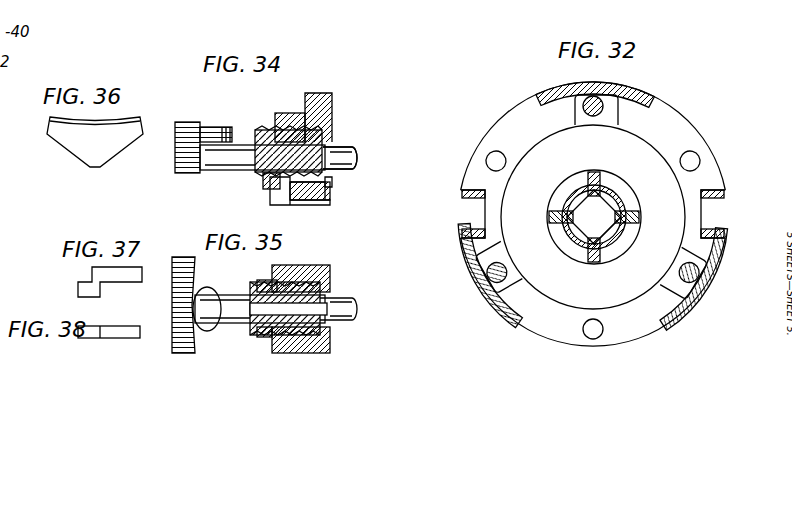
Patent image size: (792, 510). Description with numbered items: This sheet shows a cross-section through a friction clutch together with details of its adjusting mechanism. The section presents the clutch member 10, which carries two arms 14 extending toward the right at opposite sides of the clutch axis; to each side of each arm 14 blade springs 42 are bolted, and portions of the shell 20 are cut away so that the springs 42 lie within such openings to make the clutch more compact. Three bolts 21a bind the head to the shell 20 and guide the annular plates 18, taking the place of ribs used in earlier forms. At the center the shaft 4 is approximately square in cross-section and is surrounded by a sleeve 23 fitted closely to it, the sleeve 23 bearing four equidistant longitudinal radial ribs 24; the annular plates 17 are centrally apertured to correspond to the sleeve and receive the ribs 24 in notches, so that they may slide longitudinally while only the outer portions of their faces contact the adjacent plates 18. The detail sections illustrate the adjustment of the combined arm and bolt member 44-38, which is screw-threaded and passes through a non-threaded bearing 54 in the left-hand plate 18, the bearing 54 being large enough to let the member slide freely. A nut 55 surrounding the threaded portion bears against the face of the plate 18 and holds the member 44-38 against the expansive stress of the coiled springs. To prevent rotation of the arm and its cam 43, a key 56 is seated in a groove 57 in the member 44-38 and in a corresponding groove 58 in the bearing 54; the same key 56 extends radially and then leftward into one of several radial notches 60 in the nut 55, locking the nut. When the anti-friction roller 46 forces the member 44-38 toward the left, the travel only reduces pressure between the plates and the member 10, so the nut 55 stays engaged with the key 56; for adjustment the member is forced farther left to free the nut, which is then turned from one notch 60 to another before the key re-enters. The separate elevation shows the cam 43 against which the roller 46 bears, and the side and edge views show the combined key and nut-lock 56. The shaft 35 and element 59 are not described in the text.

In FIG. 32, the member 10 is at (593, 214).
In FIG. 32, the annular plate 18 is at (551, 171).
In FIG. 34, the annular plate 18 is at (333, 112).
In FIG. 35, the annular plate 18 is at (322, 275).
In FIG. 32, the shell 20 is at (638, 91).
In FIG. 32, the combined member 44-38 is at (497, 148).
In FIG. 34, the combined member 44-38 is at (345, 150).
In FIG. 35, the combined member 44-38 is at (336, 318).
In FIG. 32, the bolt 21a is at (597, 116).
In FIG. 32, the arm 14 is at (596, 214).
In FIG. 32, the blade spring 42 is at (466, 191).
In FIG. 32, the annular plate 17 is at (612, 186).
In FIG. 32, the shaft 4 is at (594, 217).
In FIG. 32, the sleeve 23 is at (613, 229).
In FIG. 32, the longitudinal radial rib 24 is at (558, 216).
In FIG. 34, the shaft 35 is at (176, 151).
In FIG. 34, the cam 43 is at (190, 128).
In FIG. 35, the cam 43 is at (185, 275).
In FIG. 36, the cam 43 is at (95, 142).
In FIG. 34, the anti-friction roller 46 is at (210, 132).
In FIG. 35, the anti-friction roller 46 is at (207, 330).
In FIG. 34, the bearing 54 is at (300, 128).
In FIG. 35, the bearing 54 is at (330, 293).
In FIG. 34, the radial notch 60 is at (278, 116).
In FIG. 34, the nut 55 is at (265, 183).
In FIG. 35, the nut 55 is at (262, 283).
In FIG. 34, the bracket 59 is at (298, 196).
In FIG. 34, the groove 58 is at (332, 184).
In FIG. 34, the key 56 is at (318, 195).
In FIG. 37, the key 56 is at (110, 276).
In FIG. 38, the key 56 is at (112, 333).
In FIG. 35, the groove 57 is at (262, 309).